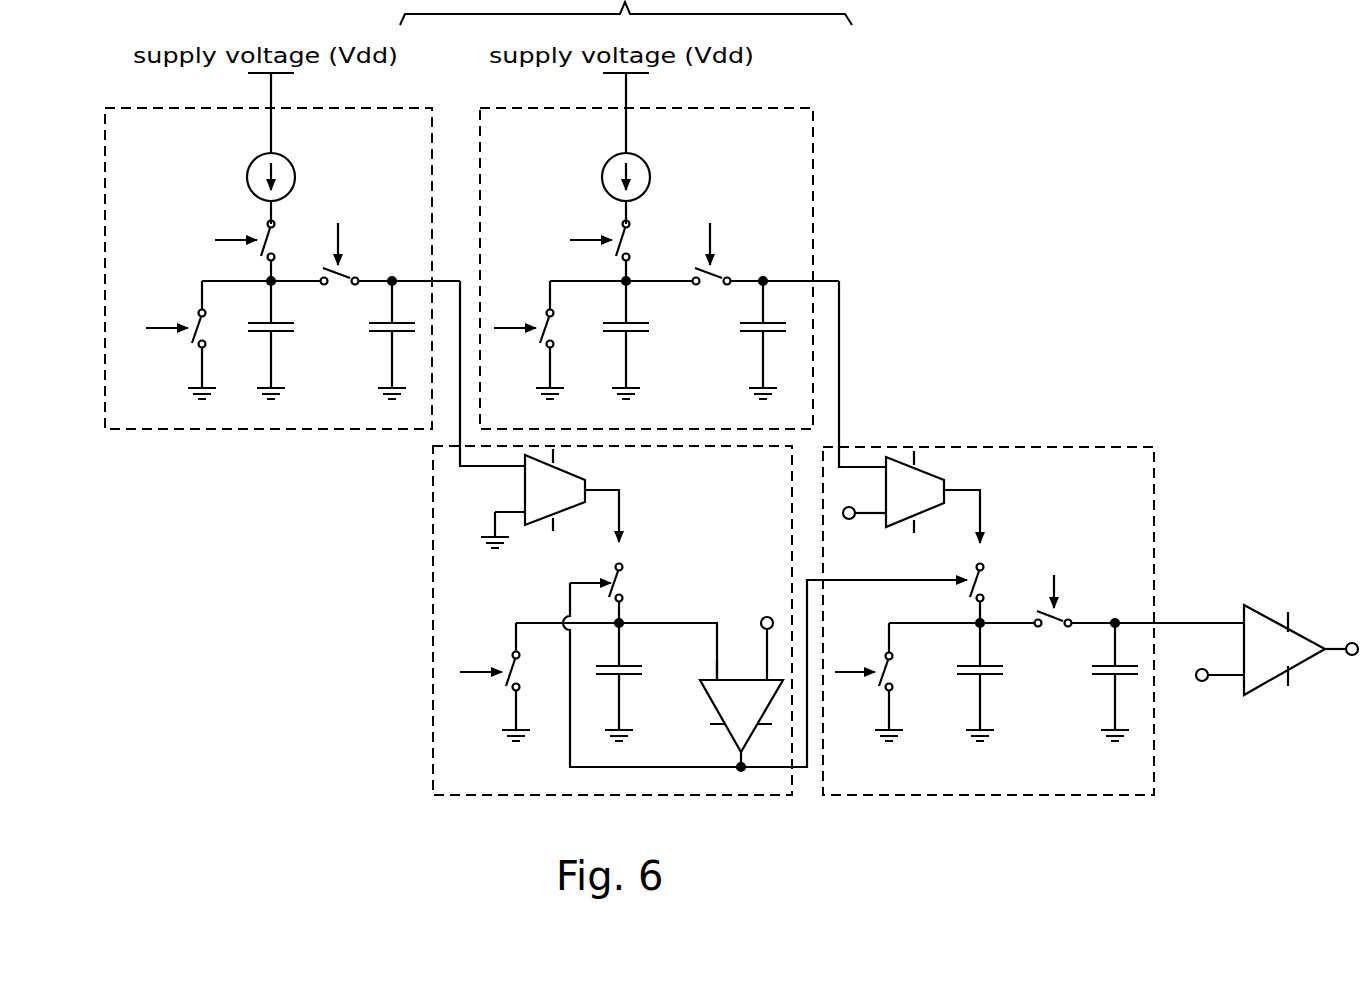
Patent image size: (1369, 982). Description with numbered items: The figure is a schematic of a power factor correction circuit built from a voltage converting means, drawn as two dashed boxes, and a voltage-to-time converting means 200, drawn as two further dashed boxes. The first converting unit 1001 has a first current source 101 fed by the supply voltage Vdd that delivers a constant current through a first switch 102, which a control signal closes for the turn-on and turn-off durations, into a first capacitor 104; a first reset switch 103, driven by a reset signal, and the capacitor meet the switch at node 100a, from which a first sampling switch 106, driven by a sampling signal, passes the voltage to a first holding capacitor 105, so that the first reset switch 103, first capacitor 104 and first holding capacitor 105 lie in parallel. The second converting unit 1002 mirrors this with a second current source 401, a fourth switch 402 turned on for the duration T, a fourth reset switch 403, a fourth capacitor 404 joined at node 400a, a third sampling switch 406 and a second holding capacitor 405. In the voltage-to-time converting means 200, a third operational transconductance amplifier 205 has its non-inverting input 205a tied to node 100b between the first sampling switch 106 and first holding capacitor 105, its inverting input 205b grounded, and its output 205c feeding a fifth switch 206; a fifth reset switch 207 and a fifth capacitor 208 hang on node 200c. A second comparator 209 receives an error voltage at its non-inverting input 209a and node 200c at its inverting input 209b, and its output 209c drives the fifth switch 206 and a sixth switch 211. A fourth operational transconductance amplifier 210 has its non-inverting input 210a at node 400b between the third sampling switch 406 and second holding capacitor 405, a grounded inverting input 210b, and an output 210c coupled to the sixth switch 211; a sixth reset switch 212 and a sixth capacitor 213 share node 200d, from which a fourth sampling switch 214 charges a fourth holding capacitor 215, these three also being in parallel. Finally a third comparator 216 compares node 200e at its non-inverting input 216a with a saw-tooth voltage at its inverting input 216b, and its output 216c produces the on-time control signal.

The first converting unit 1001 is at (432, 106).
The second converting unit 1002 is at (813, 106).
The first current source 101 is at (251, 164).
The first switch 102 is at (265, 231).
The first reset switch 103 is at (198, 314).
The first capacitor 104 is at (260, 332).
The first holding capacitor 105 is at (380, 332).
The first sampling switch 106 is at (346, 275).
The node 100a is at (268, 279).
The node 100b is at (393, 276).
The second current source 401 is at (606, 164).
The fourth switch 402 is at (620, 231).
The fourth reset switch 403 is at (546, 316).
The fourth capacitor 404 is at (615, 332).
The second holding capacitor 405 is at (752, 332).
The third sampling switch 406 is at (718, 275).
The node 400a is at (623, 279).
The node 400b is at (764, 276).
The voltage-to-time converting means 200 is at (858, 800).
The third operational transconductance amplifier 205 is at (555, 490).
The non-inverting input 205a is at (522, 468).
The inverting input 205b is at (522, 512).
The output 205c is at (587, 488).
The fifth switch 206 is at (614, 570).
The fifth reset switch 207 is at (511, 656).
The fifth capacitor 208 is at (623, 684).
The second comparator 209 is at (741, 716).
The non-inverting input 209a is at (765, 678).
The inverting input 209b is at (716, 670).
The output 209c is at (738, 753).
The node 200c is at (622, 616).
The fourth operational transconductance amplifier 210 is at (915, 492).
The non-inverting input 210a is at (884, 468).
The inverting input 210b is at (882, 516).
The output 210c is at (946, 490).
The sixth switch 211 is at (978, 568).
The sixth reset switch 212 is at (886, 660).
The sixth capacitor 213 is at (966, 676).
The fourth sampling switch 214 is at (1064, 619).
The fourth holding capacitor 215 is at (1102, 676).
The node 200d is at (984, 618).
The node 200e is at (1118, 620).
The third comparator 216 is at (1284, 650).
The non-inverting input 216a is at (1242, 630).
The inverting input 216b is at (1241, 678).
The output 216c is at (1328, 648).